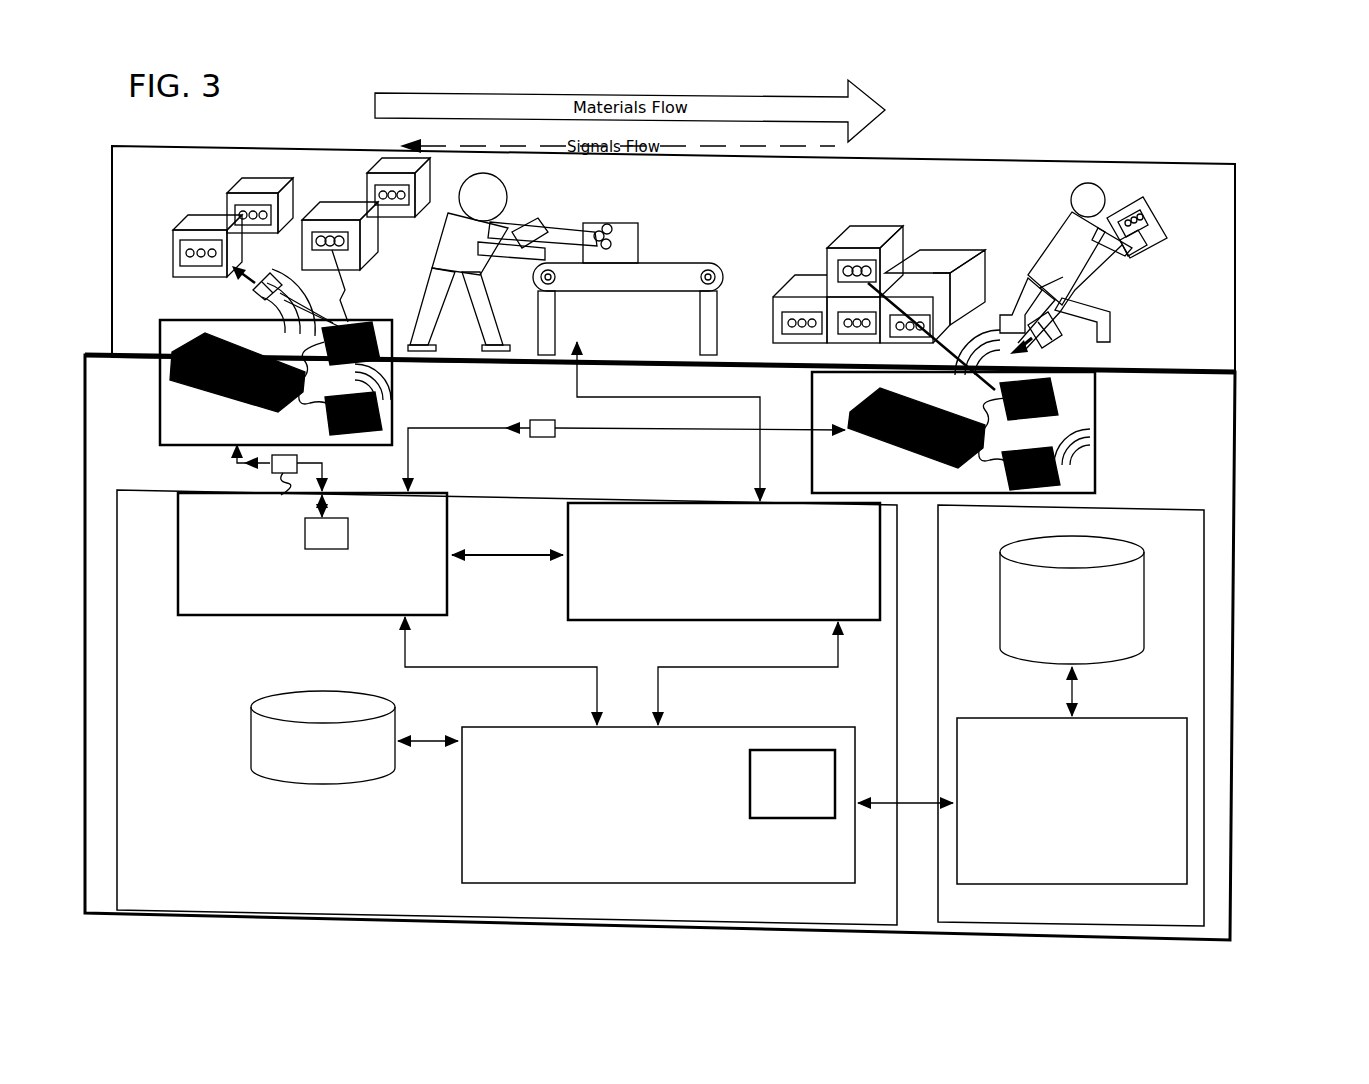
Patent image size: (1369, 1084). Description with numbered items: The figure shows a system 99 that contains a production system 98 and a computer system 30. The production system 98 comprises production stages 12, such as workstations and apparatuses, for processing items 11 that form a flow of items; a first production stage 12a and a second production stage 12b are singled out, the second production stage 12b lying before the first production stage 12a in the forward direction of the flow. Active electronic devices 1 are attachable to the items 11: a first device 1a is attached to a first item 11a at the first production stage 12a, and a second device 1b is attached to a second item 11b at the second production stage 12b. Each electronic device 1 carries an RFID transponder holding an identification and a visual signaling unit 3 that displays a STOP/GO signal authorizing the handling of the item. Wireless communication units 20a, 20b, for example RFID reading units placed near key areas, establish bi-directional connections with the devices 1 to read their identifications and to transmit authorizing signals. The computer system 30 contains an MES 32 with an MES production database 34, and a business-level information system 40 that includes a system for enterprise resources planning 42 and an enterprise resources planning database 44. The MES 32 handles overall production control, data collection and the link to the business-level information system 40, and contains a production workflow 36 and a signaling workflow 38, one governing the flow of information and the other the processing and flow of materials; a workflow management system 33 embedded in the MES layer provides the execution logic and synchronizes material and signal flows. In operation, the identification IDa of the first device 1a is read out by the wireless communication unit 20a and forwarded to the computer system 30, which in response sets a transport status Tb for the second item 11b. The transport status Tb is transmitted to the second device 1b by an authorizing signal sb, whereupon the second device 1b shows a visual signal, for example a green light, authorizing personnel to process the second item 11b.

The active electronic device 1 is at (415, 195).
The first device 1a is at (1150, 203).
The second device 1b is at (194, 264).
The visual signaling unit 3 is at (264, 209).
The items 11 is at (193, 224).
The first item 11a is at (1139, 259).
The second item 11b is at (183, 260).
The production stages 12 is at (625, 292).
The first production stage 12a is at (1000, 224).
The second production stage 12b is at (156, 203).
The wireless communication unit 20a is at (1097, 421).
The wireless communication unit 20b is at (162, 328).
The computer system 30 is at (1228, 672).
The MES 32 is at (852, 729).
The workflow management system 33 is at (792, 784).
The MES production database 34 is at (251, 734).
The production workflow 36 is at (568, 590).
The signaling workflow 38 is at (178, 590).
The business-level information system 40 is at (1199, 612).
The system for enterprise resources planning 42 is at (998, 722).
The enterprise resources planning database 44 is at (999, 616).
The production system 98 is at (1153, 165).
The system 99 is at (1296, 188).
The transport status Tb is at (305, 547).
The authorizing signal sb is at (348, 297).
The identification IDa is at (541, 423).